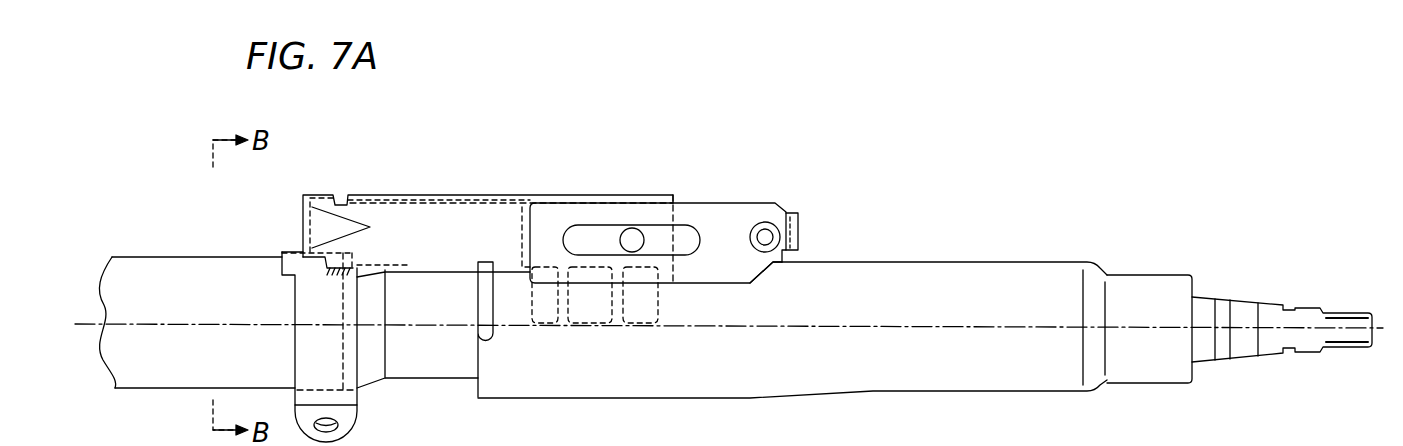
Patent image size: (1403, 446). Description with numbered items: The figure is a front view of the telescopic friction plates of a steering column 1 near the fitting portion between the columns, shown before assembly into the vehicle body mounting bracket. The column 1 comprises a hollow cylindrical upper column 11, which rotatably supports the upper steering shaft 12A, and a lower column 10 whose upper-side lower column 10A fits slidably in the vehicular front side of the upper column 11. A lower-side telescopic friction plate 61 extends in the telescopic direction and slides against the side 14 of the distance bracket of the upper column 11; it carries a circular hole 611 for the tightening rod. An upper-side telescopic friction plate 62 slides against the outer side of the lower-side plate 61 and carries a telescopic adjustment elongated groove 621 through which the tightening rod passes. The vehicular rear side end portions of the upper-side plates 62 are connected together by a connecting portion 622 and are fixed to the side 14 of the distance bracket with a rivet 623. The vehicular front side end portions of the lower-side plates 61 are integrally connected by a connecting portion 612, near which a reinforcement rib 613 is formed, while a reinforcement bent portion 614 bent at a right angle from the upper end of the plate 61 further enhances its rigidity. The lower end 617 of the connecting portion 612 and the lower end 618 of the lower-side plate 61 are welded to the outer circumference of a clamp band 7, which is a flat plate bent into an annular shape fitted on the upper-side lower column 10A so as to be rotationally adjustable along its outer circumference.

The column 1 is at (912, 213).
The clamp band 7 is at (308, 360).
The lower column 10 is at (188, 228).
The upper-side lower column 10A is at (128, 268).
The upper column 11 is at (953, 267).
The upper steering shaft 12A is at (1243, 313).
The side of distance bracket 14 is at (770, 264).
The lower-side telescopic friction plate 61 is at (368, 205).
The upper-side telescopic friction plate 62 is at (697, 213).
The circular hole 611 is at (632, 237).
The connecting portion 612 is at (296, 197).
The reinforcement rib 613 is at (318, 228).
The reinforcement bent portion 614 is at (410, 200).
The lower end of connecting portion 617 is at (298, 251).
The lower end of lower-side telescopic friction plate 618 is at (353, 265).
The telescopic adjustment elongated groove 621 is at (660, 235).
The connecting portion 622 is at (799, 228).
The rivet 623 is at (765, 232).